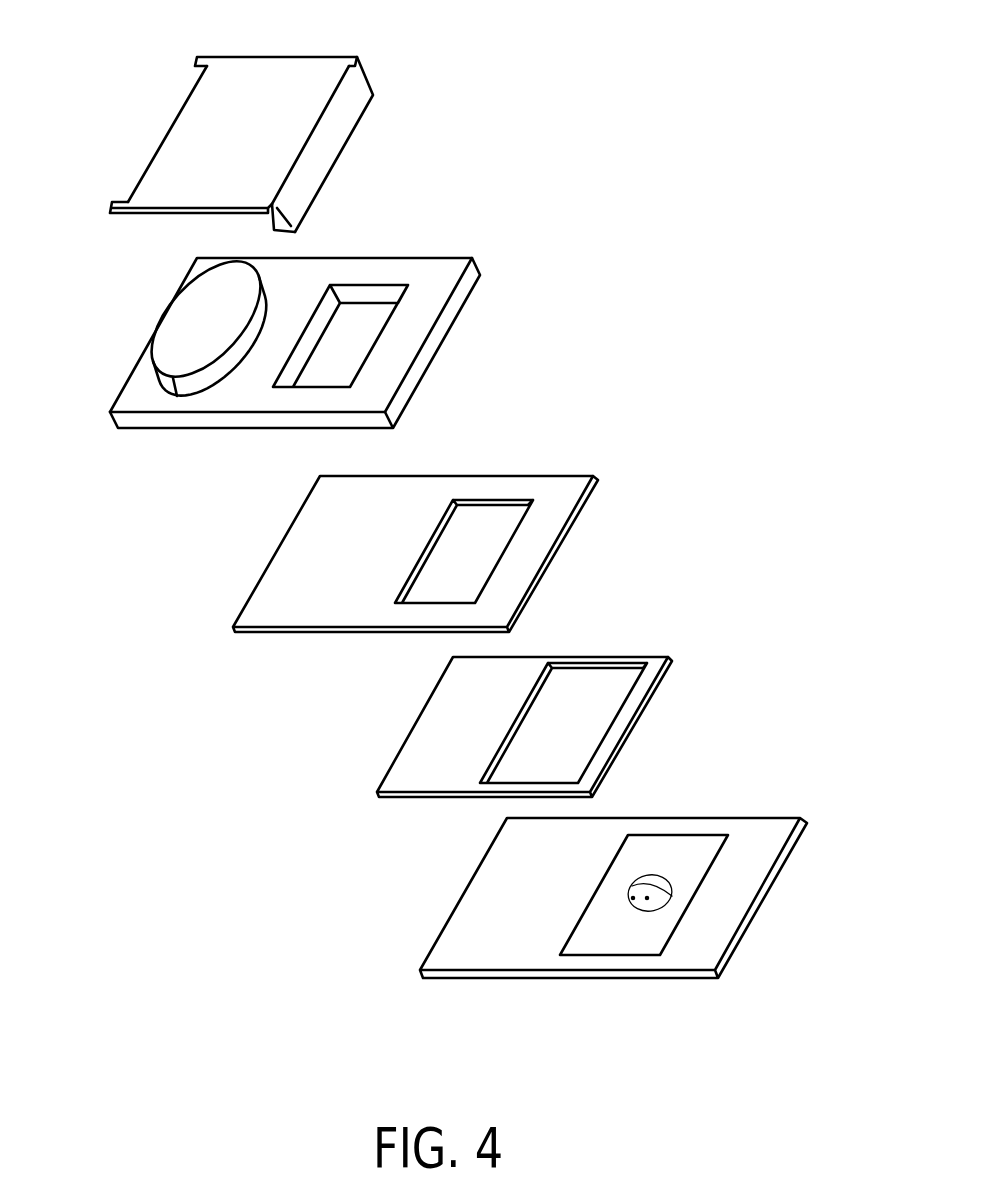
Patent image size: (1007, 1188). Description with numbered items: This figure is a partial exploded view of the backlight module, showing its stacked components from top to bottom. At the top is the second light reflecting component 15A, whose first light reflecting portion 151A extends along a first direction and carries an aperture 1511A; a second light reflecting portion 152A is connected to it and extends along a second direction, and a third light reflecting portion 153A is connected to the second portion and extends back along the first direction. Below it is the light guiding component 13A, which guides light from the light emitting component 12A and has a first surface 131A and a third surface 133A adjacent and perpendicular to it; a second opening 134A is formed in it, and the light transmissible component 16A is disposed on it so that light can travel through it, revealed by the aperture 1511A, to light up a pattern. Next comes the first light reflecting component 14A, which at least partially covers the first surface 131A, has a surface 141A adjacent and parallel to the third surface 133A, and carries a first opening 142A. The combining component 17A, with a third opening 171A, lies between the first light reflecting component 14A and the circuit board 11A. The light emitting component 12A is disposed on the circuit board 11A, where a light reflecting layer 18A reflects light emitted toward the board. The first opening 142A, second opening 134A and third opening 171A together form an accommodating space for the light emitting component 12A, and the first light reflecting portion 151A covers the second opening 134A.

The second light reflecting component 15A is at (319, 117).
The first light reflecting portion 151A is at (330, 63).
The aperture 1511A is at (149, 95).
The second light reflecting portion 152A is at (355, 90).
The third light reflecting portion 153A is at (365, 171).
The light guiding component 13A is at (331, 307).
The first surface 131A is at (437, 267).
The third surface 133A is at (447, 317).
The second opening 134A is at (363, 297).
The light transmissible component 16A is at (187, 325).
The first light reflecting component 14A is at (457, 509).
The surface 141A is at (577, 522).
The first opening 142A is at (510, 490).
The combining component 17A is at (556, 701).
The third opening 171A is at (591, 674).
The circuit board 11A is at (634, 909).
The light emitting component 12A is at (660, 895).
The light reflecting layer 18A is at (640, 937).